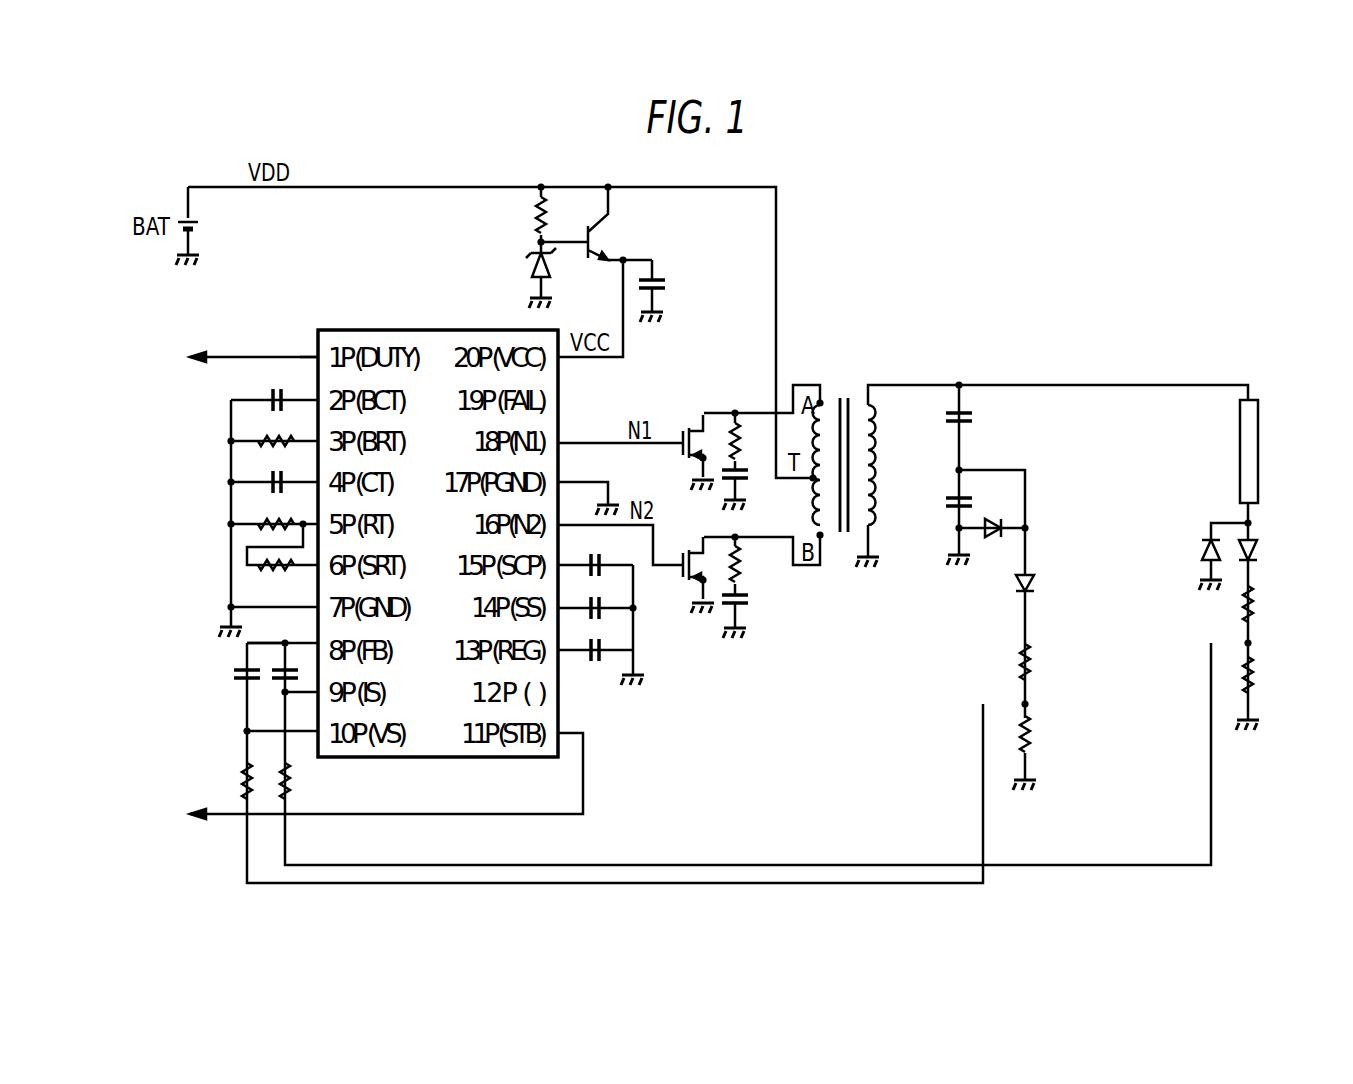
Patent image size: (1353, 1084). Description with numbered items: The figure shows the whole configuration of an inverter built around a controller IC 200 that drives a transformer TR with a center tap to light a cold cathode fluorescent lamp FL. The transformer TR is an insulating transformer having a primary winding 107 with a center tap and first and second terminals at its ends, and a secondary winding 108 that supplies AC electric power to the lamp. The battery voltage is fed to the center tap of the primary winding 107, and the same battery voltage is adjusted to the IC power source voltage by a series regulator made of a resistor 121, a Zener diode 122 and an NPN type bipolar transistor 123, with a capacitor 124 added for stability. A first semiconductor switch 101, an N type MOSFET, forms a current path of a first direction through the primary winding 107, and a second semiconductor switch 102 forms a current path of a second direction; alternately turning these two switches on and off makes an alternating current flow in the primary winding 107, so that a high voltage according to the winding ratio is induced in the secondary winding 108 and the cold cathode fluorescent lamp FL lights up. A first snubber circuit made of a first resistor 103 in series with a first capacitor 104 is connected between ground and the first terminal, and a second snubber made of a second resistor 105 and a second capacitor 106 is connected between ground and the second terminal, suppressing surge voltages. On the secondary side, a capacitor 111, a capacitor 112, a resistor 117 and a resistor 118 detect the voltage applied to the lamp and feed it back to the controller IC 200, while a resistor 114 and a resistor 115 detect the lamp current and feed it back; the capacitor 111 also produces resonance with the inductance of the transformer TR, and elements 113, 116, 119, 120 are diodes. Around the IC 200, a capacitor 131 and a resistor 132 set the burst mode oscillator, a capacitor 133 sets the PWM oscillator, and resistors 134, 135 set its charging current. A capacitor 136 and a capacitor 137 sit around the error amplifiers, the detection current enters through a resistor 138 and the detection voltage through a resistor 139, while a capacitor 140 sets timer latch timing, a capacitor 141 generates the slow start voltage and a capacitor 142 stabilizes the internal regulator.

The first semiconductor switch 101 is at (691, 445).
The second semiconductor switch 102 is at (691, 567).
The first resistor 103 is at (753, 439).
The first capacitor 104 is at (751, 490).
The second resistor 105 is at (753, 564).
The second capacitor 106 is at (752, 611).
The primary winding 107 is at (799, 468).
The secondary winding 108 is at (890, 465).
The capacitor 111 is at (976, 417).
The capacitor 112 is at (977, 500).
The diode 113 is at (1269, 548).
The resistor 114 is at (1268, 604).
The resistor 115 is at (1268, 675).
The diode 116 is at (1044, 585).
The resistor 117 is at (1044, 662).
The resistor 118 is at (1040, 753).
The diode 119 is at (1190, 548).
The diode 120 is at (997, 546).
The resistor 121 is at (544, 216).
The Zener diode 122 is at (523, 275).
The NPN type bipolar transistor 123 is at (609, 225).
The capacitor 124 is at (669, 291).
The capacitor for setting 131 is at (277, 385).
The resistor for setting 132 is at (276, 428).
The capacitor for setting 133 is at (277, 468).
The resistor for setting 134 is at (276, 511).
The resistor for setting 135 is at (276, 580).
The capacitor 136 is at (295, 659).
The capacitor 137 is at (228, 672).
The resistor 138 is at (303, 781).
The resistor 139 is at (228, 781).
The capacitor 140 is at (597, 550).
The capacitor 141 is at (597, 594).
The capacitor 142 is at (597, 637).
The IC for inverter control 200 is at (410, 330).
The transformer with center tap TR is at (843, 452).
The cold cathode fluorescent lamp FL is at (1258, 447).